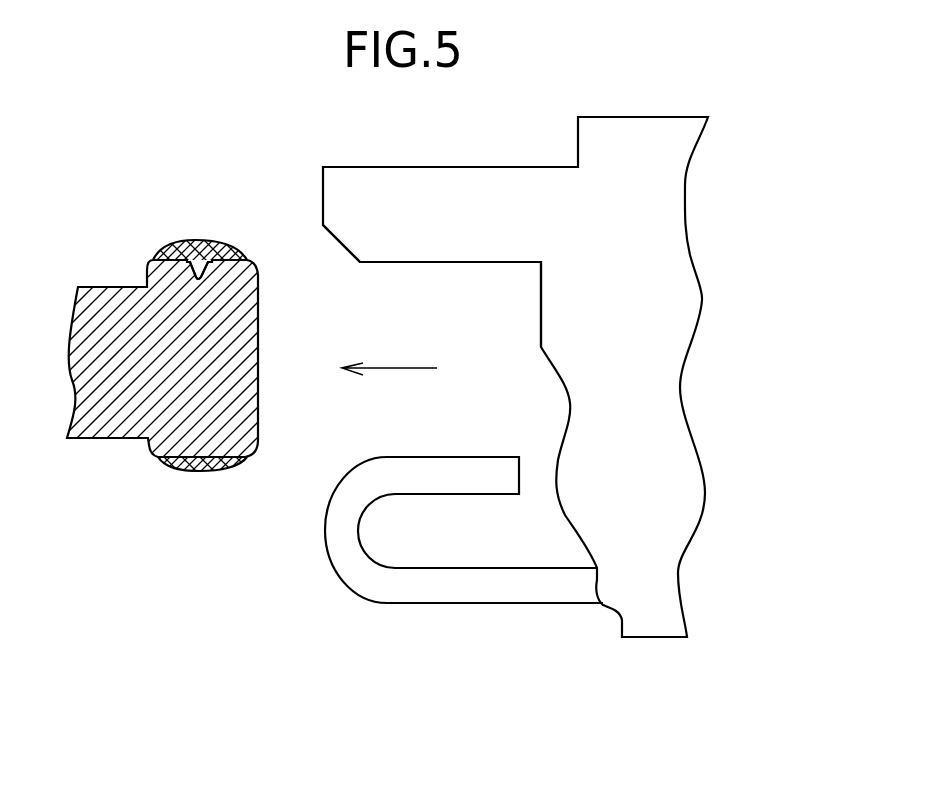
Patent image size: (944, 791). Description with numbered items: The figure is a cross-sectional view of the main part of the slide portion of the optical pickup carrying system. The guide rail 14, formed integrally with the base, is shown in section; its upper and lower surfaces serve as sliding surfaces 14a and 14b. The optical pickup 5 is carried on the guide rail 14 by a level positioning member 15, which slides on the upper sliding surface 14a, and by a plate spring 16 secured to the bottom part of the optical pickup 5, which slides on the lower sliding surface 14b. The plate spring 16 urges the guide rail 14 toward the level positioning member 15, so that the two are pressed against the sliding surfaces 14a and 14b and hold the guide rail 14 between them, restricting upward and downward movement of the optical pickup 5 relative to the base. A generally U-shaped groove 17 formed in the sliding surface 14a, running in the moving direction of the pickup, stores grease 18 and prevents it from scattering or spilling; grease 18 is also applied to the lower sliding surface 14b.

The optical pickup 5 is at (627, 323).
The guide rail 14 is at (240, 327).
The sliding surface 14a is at (175, 253).
The sliding surface 14b is at (172, 467).
The level positioning member 15 is at (447, 263).
The plate spring 16 is at (425, 470).
The groove 17 is at (218, 255).
The grease 18 is at (197, 250).